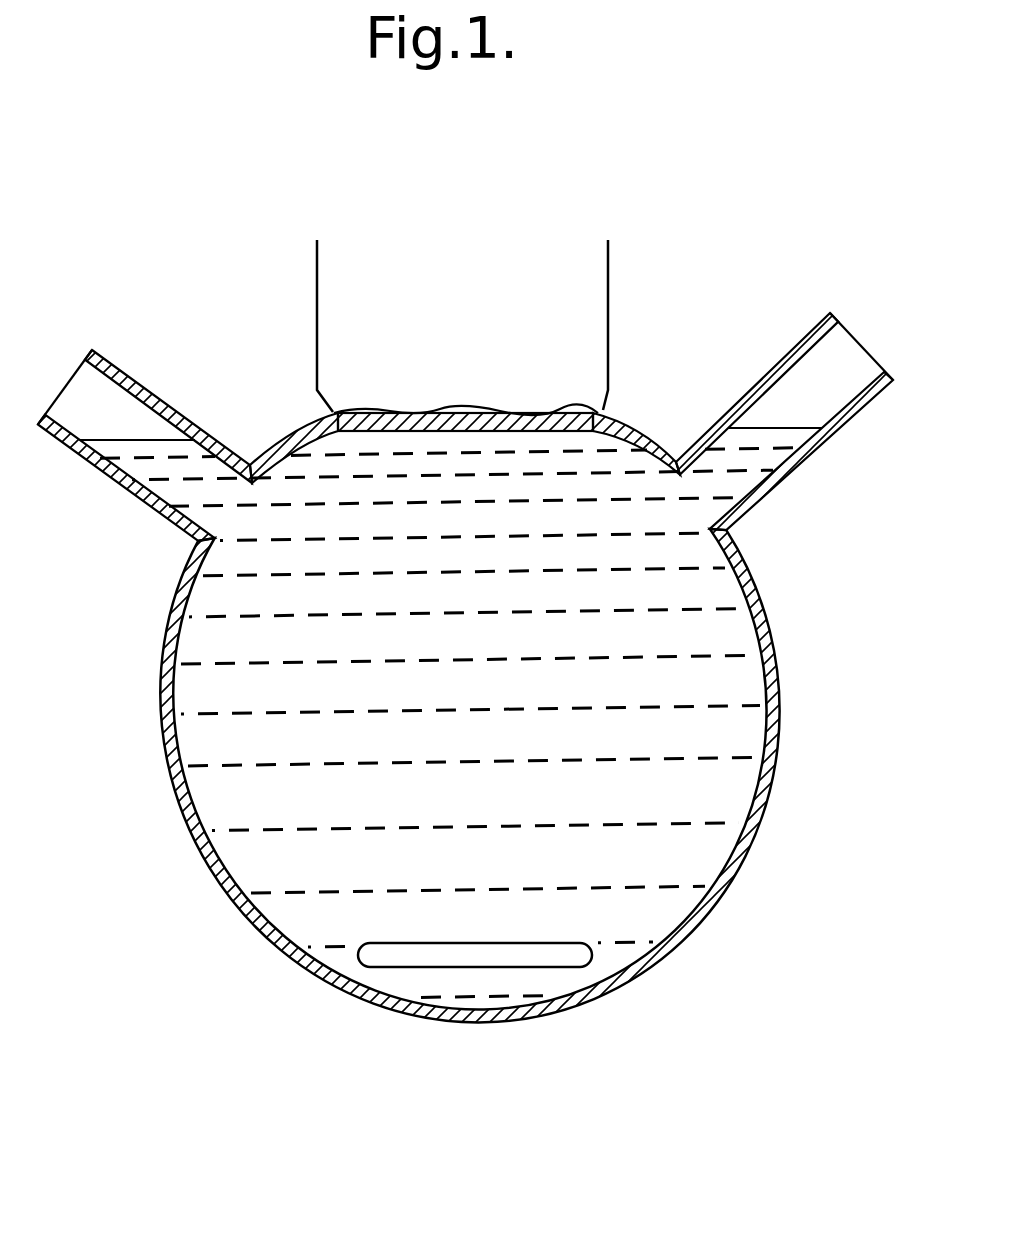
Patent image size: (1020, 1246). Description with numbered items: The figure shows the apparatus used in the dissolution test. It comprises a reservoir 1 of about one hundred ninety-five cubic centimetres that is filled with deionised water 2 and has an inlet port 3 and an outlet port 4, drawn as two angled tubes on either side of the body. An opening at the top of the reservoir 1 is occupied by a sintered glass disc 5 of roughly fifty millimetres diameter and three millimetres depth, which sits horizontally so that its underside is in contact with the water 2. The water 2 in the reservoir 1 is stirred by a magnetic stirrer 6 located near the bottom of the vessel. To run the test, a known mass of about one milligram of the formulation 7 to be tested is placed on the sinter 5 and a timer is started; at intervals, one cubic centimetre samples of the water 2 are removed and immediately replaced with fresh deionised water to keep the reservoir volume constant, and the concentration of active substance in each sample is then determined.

The reservoir 1 is at (773, 780).
The deionised water 2 is at (690, 863).
The inlet port 3 is at (740, 399).
The outlet port 4 is at (121, 371).
The sintered glass disc 5 is at (398, 415).
The magnetic stirrer 6 is at (545, 953).
The formulation 7 is at (473, 413).